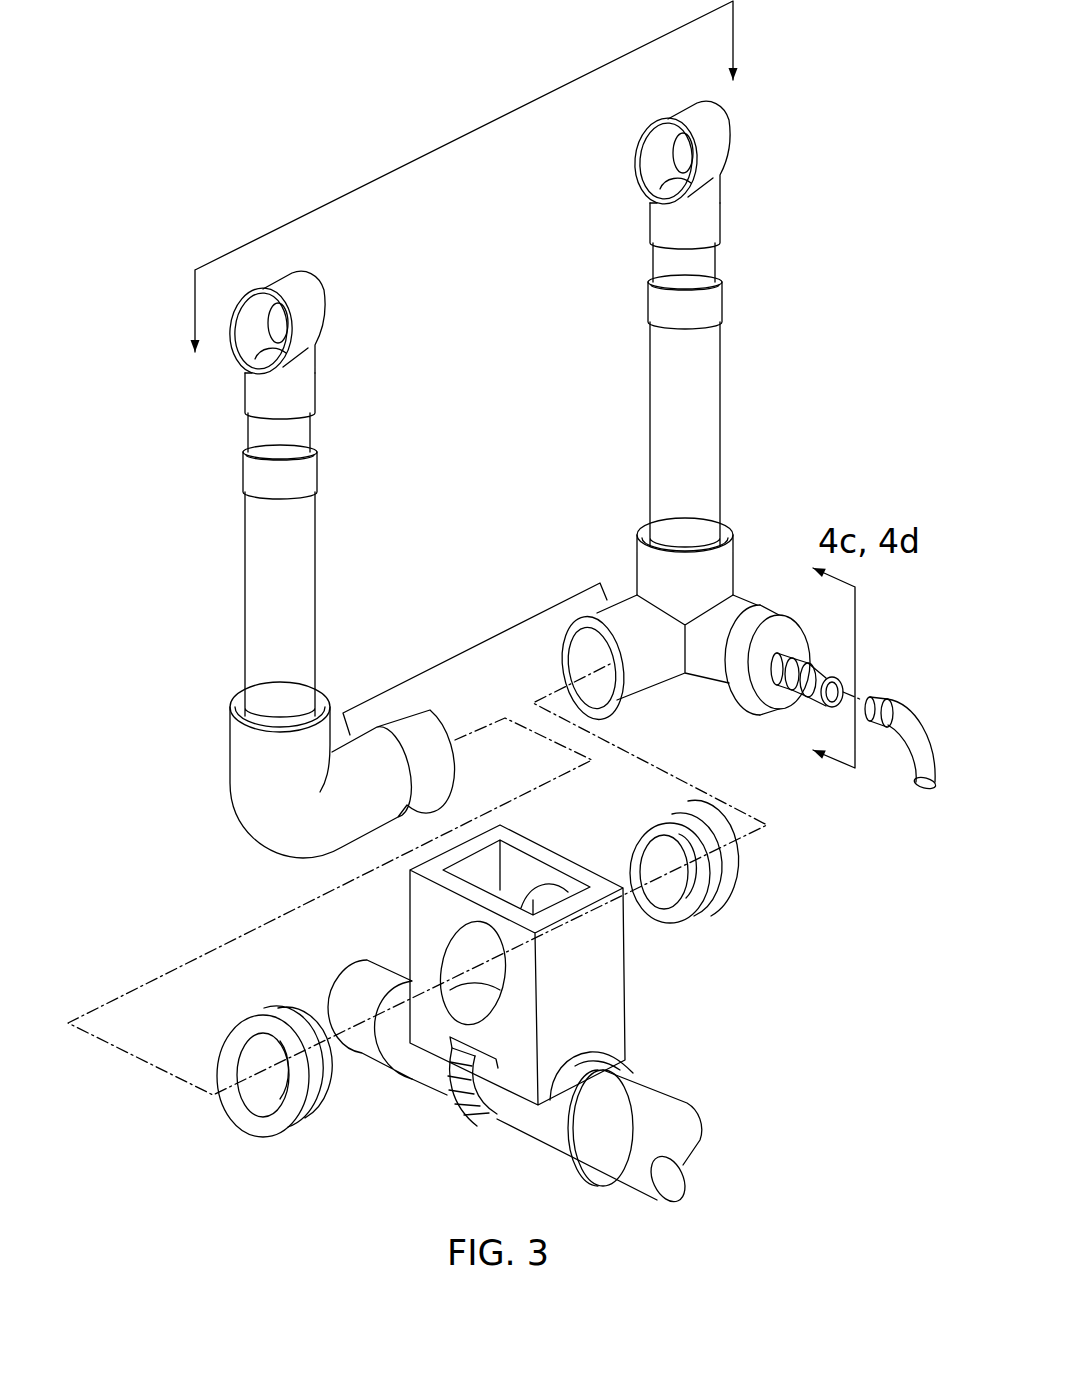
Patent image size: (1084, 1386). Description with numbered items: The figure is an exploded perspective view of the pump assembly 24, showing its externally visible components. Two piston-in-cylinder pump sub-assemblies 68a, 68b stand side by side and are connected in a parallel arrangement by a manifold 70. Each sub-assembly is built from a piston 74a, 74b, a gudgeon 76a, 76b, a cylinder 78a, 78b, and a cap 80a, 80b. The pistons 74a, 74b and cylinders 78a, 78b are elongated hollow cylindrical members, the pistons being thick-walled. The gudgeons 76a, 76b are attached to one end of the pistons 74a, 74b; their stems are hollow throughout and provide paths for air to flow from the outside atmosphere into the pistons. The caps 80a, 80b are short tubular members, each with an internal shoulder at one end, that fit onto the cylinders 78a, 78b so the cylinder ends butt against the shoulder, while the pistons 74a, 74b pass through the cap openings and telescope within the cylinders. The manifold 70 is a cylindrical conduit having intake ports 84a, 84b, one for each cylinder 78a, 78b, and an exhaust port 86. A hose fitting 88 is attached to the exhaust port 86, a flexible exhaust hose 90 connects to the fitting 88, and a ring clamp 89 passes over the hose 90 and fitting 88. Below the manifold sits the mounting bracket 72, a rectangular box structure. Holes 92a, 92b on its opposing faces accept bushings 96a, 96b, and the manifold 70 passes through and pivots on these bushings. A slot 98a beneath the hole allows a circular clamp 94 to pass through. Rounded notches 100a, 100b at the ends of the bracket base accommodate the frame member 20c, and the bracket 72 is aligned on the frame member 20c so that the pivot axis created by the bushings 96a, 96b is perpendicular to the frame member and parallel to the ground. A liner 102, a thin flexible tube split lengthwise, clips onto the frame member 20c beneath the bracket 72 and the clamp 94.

The pump assembly 24 is at (235, 218).
The piston-in-cylinder pump sub-assembly 68a is at (223, 565).
The piston-in-cylinder pump sub-assembly 68b is at (620, 390).
The manifold 70 is at (475, 659).
The mounting bracket 72 is at (603, 1007).
The piston 74a is at (290, 445).
The piston 74b is at (695, 278).
The gudgeon 76a is at (310, 315).
The gudgeon 76b is at (713, 143).
The cylinder 78a is at (300, 600).
The cylinder 78b is at (705, 425).
The cap 80a is at (300, 475).
The cap 80b is at (710, 307).
The intake port 84a is at (263, 720).
The intake port 84b is at (730, 517).
The exhaust port 86 is at (745, 675).
The hose fitting 88 is at (814, 702).
The ring clamp 89 is at (887, 707).
The flexible exhaust hose 90 is at (913, 755).
The hole 92a is at (462, 935).
The hole 92b is at (533, 900).
The circular clamp 94 is at (460, 1113).
The bushing 96a is at (287, 1113).
The bushing 96b is at (733, 880).
The slot 98a is at (453, 1057).
The rounded notch 100a is at (577, 1050).
The rounded notch 100b is at (478, 997).
The liner 102 is at (553, 1123).
The frame member 20c is at (620, 1103).